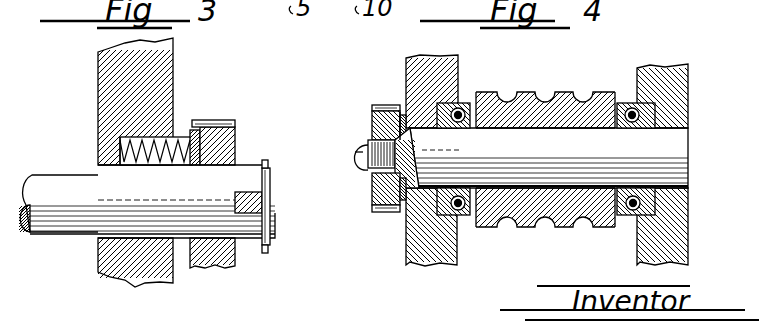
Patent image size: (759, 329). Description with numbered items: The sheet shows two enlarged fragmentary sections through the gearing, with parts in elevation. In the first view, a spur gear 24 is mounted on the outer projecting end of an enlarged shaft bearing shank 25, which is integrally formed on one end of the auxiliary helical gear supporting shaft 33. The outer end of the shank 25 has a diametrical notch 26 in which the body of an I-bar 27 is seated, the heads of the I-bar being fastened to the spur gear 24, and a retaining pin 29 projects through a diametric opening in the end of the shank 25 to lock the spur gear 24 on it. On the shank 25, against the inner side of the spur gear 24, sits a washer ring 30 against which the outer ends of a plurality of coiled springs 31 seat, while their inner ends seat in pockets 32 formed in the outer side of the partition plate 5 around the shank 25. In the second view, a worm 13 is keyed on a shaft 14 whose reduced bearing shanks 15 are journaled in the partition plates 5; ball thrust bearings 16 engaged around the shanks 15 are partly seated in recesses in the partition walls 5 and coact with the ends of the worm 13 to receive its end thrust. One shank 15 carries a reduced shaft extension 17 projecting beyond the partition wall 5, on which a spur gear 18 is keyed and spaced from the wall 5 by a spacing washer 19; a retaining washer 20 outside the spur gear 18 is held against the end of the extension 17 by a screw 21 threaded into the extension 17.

In FIG. 3, the partition plate 5 is at (113, 70).
In FIG. 4, the partition plate 5 is at (420, 250).
In FIG. 4, the worm 13 is at (555, 93).
In FIG. 4, the shaft 14 is at (486, 130).
In FIG. 4, the bearing shank 15 is at (445, 176).
In FIG. 4, the ball thrust bearing 16 is at (462, 215).
In FIG. 4, the shaft extension 17 is at (372, 126).
In FIG. 4, the spur gear 18 is at (378, 105).
In FIG. 4, the spacing washer 19 is at (403, 110).
In FIG. 4, the retaining washer 20 is at (373, 190).
In FIG. 4, the screw 21 is at (362, 150).
In FIG. 3, the spur gear 24 is at (220, 126).
In FIG. 3, the shaft bearing shank 25 is at (125, 210).
In FIG. 3, the diametrical notch 26 is at (272, 196).
In FIG. 3, the I-bar 27 is at (248, 175).
In FIG. 3, the retaining pin 29 is at (267, 253).
In FIG. 3, the washer ring 30 is at (194, 268).
In FIG. 3, the coiled spring 31 is at (186, 137).
In FIG. 3, the pocket 32 is at (135, 140).
In FIG. 3, the auxiliary helical gear supporting shaft 33 is at (58, 177).